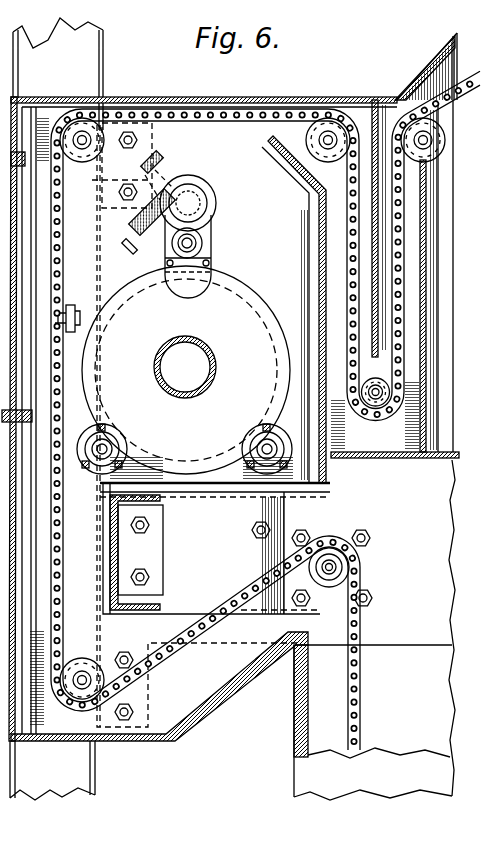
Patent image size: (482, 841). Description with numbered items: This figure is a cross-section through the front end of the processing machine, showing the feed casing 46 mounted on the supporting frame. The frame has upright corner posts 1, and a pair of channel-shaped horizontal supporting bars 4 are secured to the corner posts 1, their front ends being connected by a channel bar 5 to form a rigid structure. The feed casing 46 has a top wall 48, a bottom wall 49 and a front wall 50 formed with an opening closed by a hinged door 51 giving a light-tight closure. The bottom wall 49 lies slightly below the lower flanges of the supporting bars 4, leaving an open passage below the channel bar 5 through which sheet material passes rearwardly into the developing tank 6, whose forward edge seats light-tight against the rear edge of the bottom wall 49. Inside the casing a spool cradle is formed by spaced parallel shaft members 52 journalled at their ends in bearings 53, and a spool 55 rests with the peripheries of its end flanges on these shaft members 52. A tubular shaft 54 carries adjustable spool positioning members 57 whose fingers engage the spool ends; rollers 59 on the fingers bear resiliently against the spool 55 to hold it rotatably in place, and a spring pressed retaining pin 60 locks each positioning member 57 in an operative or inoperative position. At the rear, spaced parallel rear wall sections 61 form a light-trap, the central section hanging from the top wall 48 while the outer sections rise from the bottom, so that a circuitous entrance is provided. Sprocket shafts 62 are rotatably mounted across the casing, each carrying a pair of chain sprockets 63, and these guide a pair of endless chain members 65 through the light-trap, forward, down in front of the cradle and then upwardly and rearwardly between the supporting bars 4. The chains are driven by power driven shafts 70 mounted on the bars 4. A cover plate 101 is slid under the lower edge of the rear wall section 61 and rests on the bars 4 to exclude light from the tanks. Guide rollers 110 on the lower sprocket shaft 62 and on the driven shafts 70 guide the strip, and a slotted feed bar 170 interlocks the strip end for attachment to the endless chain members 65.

The corner post 1 is at (103, 67).
The horizontal supporting bar 4 is at (416, 633).
The channel bar 5 is at (156, 606).
The developing tank 6 is at (373, 722).
The feed casing 46 is at (216, 92).
The top wall 48 is at (130, 98).
The bottom wall 49 is at (147, 741).
The front wall 50 is at (10, 735).
The door 51 is at (17, 252).
The shaft member 52 is at (100, 466).
The bearing 53 is at (95, 440).
The tubular shaft 54 is at (194, 190).
The spool 55 is at (232, 275).
The spool positioning member 57 is at (213, 197).
The roller 59 is at (204, 241).
The retaining pin 60 is at (148, 242).
The rear wall section 61 is at (320, 254).
The sprocket shaft 62 is at (86, 150).
The chain sprocket 63 is at (100, 158).
The endless chain member 65 is at (245, 120).
The power driven shaft 70 is at (342, 567).
The cover plate 101 is at (437, 458).
The guide roller 110 is at (322, 586).
The feed bar 170 is at (72, 304).